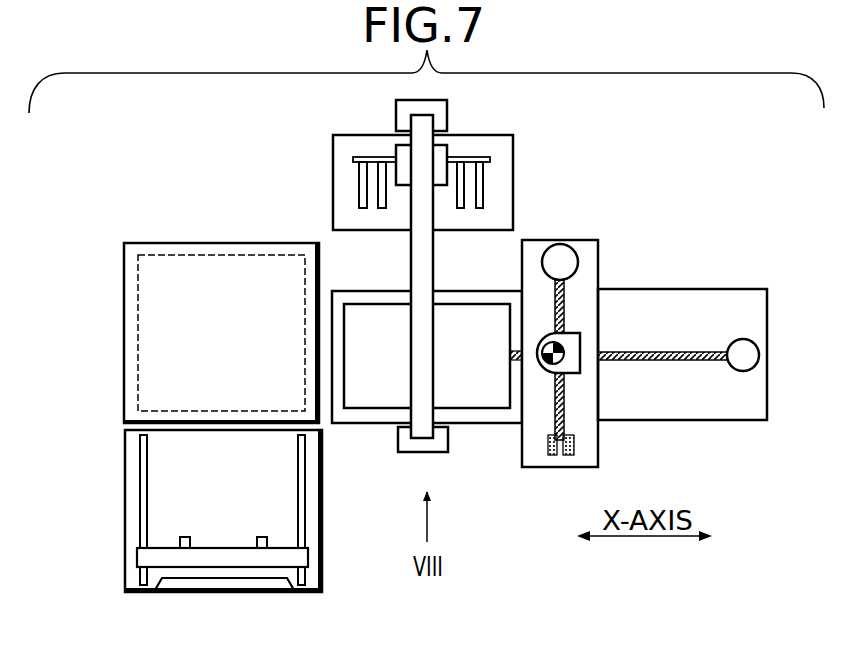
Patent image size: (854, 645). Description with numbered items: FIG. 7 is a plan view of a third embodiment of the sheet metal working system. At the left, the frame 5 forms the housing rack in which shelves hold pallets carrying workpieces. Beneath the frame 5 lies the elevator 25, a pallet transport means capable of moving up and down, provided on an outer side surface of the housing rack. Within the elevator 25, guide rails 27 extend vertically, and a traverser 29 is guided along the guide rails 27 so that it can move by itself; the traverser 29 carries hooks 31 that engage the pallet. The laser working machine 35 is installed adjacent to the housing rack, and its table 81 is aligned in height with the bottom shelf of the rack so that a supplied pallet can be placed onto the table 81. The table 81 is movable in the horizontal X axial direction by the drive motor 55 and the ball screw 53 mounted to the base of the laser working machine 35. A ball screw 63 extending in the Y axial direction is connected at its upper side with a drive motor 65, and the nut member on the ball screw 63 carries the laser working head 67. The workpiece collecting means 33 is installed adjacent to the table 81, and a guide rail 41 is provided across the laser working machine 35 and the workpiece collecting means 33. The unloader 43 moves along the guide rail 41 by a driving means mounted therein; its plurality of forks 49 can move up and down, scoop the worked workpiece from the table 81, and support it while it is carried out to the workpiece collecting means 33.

The frame 5 is at (124, 337).
The elevator 25 is at (125, 500).
The guide rails 27 is at (298, 487).
The traverser 29 is at (222, 556).
The hooks 31 is at (257, 538).
The workpiece collecting means 33 is at (500, 178).
The laser working machine 35 is at (702, 275).
The guide rail 41 is at (420, 350).
The unloader 43 is at (444, 153).
The forks 49 is at (479, 197).
The ball screw 53 is at (689, 348).
The drive motor 55 is at (768, 354).
The ball screw 63 is at (567, 418).
The drive motor 65 is at (580, 260).
The laser working head 67 is at (582, 342).
The table 81 is at (372, 398).